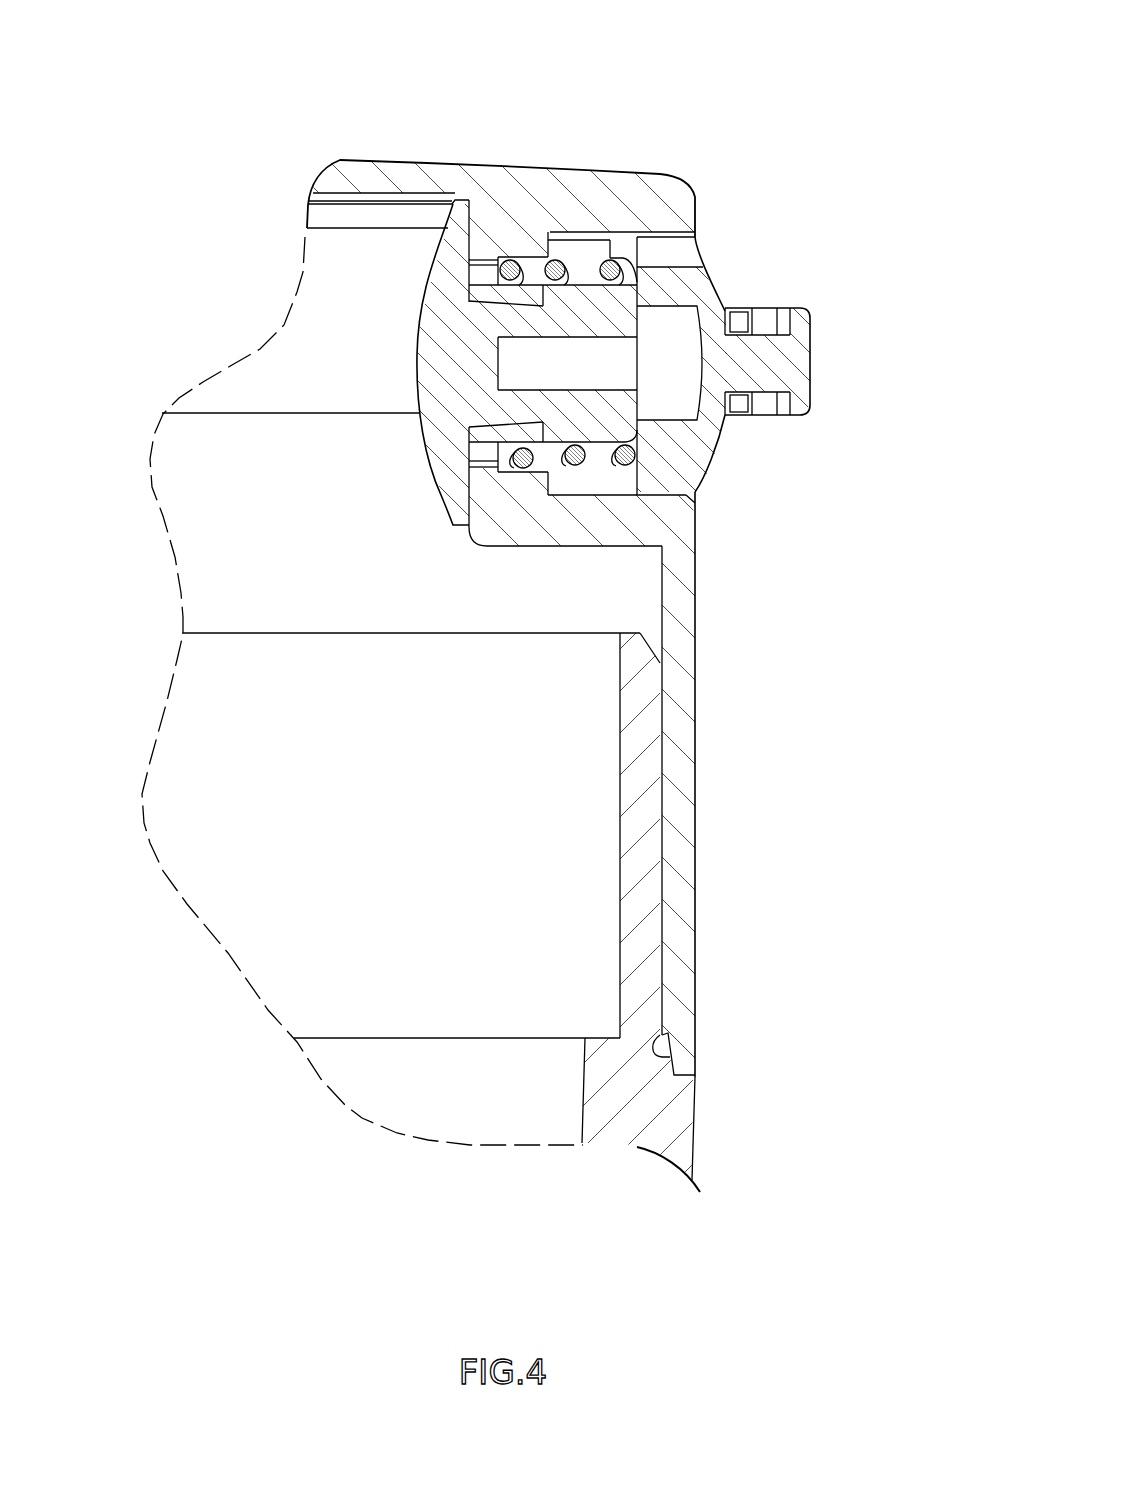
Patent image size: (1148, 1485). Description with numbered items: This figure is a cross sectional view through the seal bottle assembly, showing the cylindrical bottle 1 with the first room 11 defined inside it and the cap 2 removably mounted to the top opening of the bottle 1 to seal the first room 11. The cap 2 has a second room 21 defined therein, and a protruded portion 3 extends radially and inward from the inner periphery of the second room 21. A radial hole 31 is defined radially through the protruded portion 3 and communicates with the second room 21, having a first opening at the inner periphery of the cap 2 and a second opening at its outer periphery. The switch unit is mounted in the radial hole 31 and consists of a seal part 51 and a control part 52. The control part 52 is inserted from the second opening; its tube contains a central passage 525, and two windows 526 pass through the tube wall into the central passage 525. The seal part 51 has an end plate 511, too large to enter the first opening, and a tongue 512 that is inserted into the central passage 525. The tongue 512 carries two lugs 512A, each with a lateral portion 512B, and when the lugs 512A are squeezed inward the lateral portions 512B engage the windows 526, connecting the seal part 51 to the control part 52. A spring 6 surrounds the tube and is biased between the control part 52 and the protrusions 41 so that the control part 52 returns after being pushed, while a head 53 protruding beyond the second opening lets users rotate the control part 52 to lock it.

The bottle 1 is at (678, 1120).
The first room 11 is at (484, 1102).
The cap 2 is at (683, 772).
The second room 21 is at (233, 474).
The protruded portion 3 is at (497, 527).
The radial hole 31 is at (600, 492).
The protrusion 41 is at (485, 277).
The seal part 51 is at (485, 58).
The end plate 511 is at (444, 241).
The tongue 512 is at (685, 108).
The lug 512A is at (532, 318).
The lateral portion 512B is at (585, 298).
The control part 52 is at (715, 302).
The central passage 525 is at (668, 400).
The window 526 is at (634, 292).
The head 53 is at (800, 357).
The spring 6 is at (603, 272).